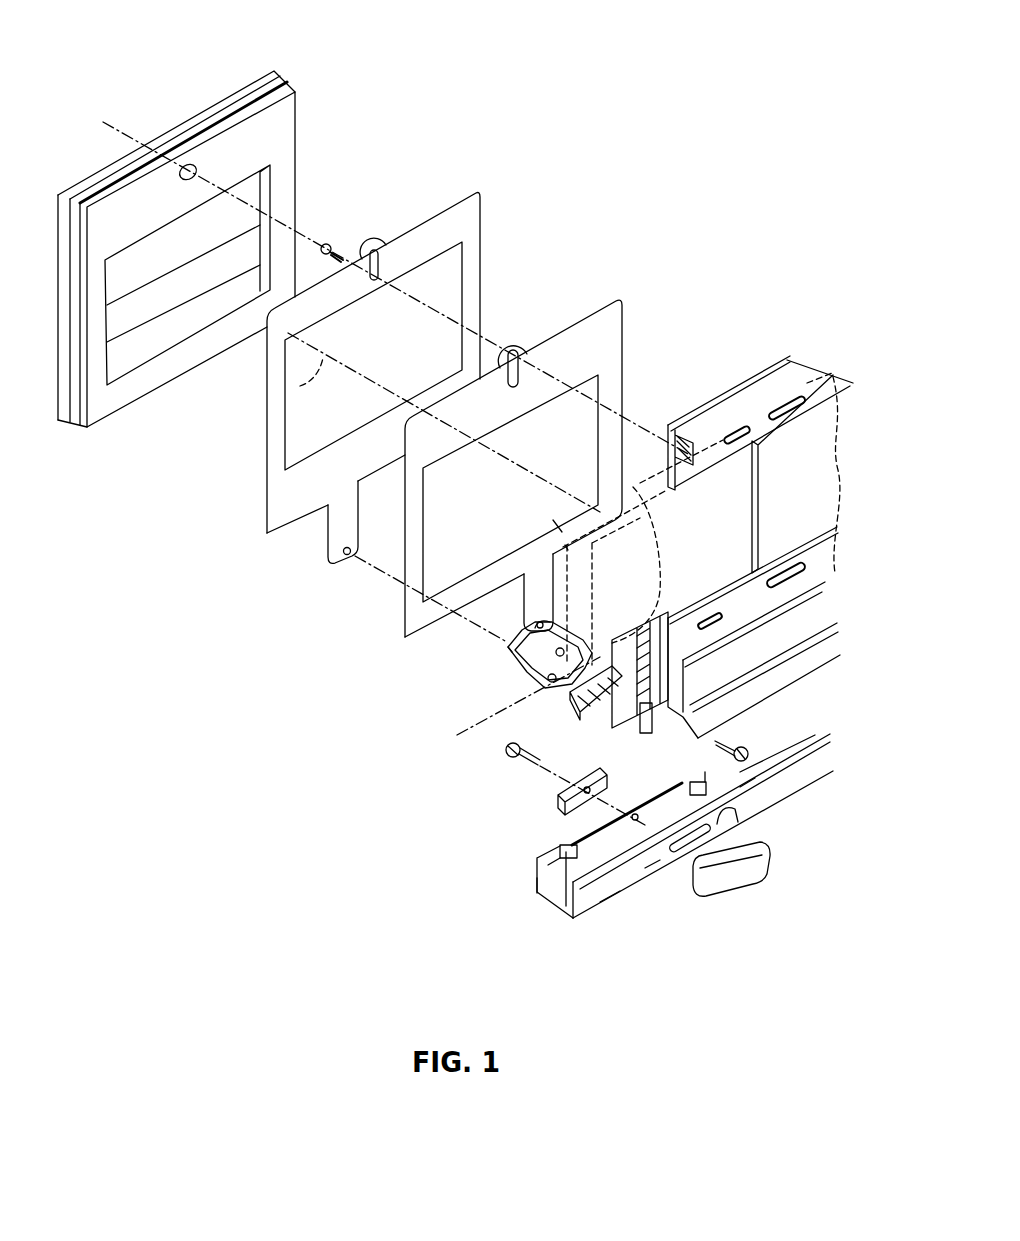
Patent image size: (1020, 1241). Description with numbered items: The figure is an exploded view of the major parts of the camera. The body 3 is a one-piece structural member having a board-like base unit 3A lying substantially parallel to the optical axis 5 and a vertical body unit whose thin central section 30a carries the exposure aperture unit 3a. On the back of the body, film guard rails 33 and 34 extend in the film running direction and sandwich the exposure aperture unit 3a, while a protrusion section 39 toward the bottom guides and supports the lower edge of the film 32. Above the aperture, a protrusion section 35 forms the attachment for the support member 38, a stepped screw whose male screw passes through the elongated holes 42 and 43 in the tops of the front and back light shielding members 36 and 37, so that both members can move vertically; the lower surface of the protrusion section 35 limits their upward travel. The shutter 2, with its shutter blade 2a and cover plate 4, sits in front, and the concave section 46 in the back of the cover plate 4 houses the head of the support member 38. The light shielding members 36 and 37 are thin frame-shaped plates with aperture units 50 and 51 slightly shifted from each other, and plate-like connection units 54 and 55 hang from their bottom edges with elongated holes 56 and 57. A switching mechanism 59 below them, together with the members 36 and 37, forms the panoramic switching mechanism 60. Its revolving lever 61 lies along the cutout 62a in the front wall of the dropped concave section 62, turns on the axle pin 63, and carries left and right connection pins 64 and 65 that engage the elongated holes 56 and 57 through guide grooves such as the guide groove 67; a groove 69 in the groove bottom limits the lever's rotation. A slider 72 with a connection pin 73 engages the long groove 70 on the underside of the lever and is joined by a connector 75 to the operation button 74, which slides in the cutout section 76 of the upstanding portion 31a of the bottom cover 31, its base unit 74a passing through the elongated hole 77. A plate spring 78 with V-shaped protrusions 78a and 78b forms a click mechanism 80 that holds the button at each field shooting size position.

The shutter 2 is at (257, 58).
The shutter blade 2a is at (250, 277).
The cover plate 4 is at (296, 108).
The concave section 46 is at (190, 164).
The optical axis 5 is at (285, 383).
The support member 38 is at (340, 240).
The front light shielding member 36 is at (470, 192).
The aperture unit 50 is at (290, 432).
The elongated hole 42 is at (385, 262).
The connection unit 54 is at (340, 518).
The elongated hole 56 is at (345, 558).
The back light shielding member 37 is at (630, 295).
The aperture unit 51 is at (425, 556).
The elongated hole 43 is at (522, 350).
The connection unit 55 is at (521, 604).
The elongated hole 57 is at (518, 648).
The connection pin 65 is at (553, 520).
The body 3 is at (767, 350).
The central section 30a is at (733, 383).
The film guard rail 33 is at (797, 398).
The protrusion section 35 is at (684, 430).
The exposure aperture unit 3a is at (752, 500).
The film 32 is at (840, 490).
The film guard rail 34 is at (775, 570).
The protrusion section 39 is at (805, 598).
The cutout 62a is at (604, 625).
The dropped concave section 62 is at (702, 772).
The guide groove 67 is at (643, 640).
The groove 69 is at (645, 732).
The axle pin 63 is at (745, 748).
The connection pin 64 is at (515, 655).
The revolving lever 61 is at (548, 682).
The base unit 3A is at (580, 708).
The long groove 70 is at (517, 717).
The switching mechanism 59 is at (460, 788).
The connector 75 is at (515, 760).
The slider 72 is at (560, 812).
The connection pin 73 is at (553, 798).
The panoramic switching mechanism 60 is at (407, 874).
The bottom cover 31 is at (550, 890).
The upstanding portion 31a is at (603, 890).
The plate spring 78 is at (593, 840).
The V-shaped protrusion 78a is at (548, 892).
The V-shaped protrusion 78b is at (747, 783).
The click mechanism 80 is at (540, 866).
The base unit 74a is at (712, 837).
The elongated hole 77 is at (678, 863).
The operation button 74 is at (762, 865).
The cutout section 76 is at (650, 865).